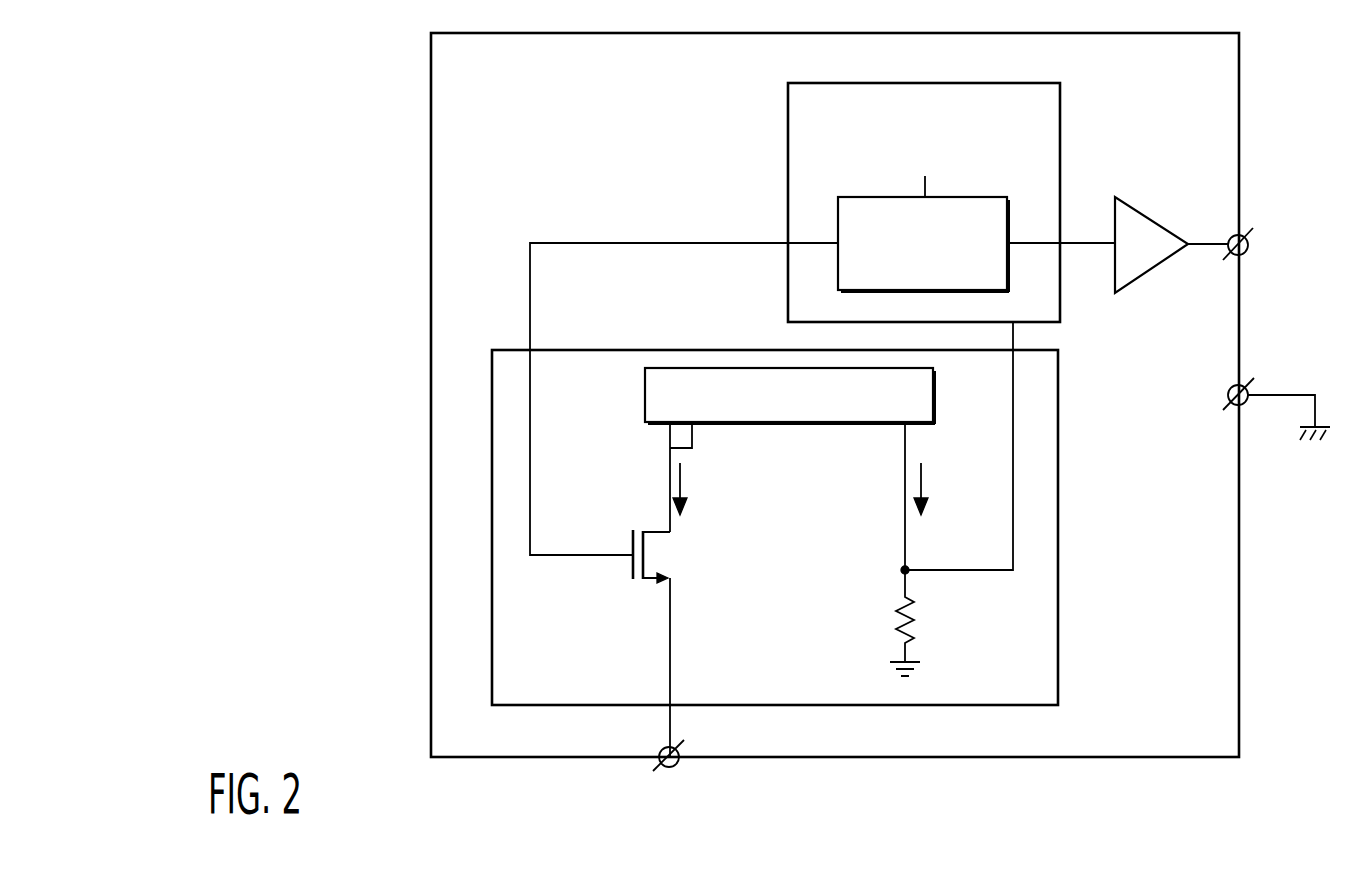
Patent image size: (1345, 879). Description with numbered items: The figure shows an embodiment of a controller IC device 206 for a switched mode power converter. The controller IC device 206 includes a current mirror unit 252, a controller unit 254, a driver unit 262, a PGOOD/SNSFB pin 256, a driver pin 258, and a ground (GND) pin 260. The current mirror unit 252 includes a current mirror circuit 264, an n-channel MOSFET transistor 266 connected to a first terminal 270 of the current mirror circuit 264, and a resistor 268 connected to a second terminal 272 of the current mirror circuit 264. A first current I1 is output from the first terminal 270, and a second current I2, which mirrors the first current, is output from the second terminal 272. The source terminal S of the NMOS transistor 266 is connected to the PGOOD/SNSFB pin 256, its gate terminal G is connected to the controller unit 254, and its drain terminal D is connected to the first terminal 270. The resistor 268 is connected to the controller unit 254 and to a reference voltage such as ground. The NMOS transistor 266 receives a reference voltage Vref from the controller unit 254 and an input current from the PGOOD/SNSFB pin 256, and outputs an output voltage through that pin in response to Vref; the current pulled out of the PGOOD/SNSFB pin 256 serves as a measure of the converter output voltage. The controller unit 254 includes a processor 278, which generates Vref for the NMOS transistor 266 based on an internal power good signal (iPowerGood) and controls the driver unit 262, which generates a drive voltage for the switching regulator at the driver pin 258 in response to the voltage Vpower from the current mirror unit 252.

The controller IC device 206 is at (431, 92).
The current mirror unit 252 is at (491, 501).
The controller unit 254 is at (788, 121).
The PGOOD/SNSFB pin 256 is at (678, 765).
The driver pin 258 is at (1243, 232).
The ground (GND) pin 260 is at (1246, 403).
The driver unit 262 is at (1152, 217).
The current mirror circuit 264 is at (783, 425).
The n-channel MOSFET (NMOS) transistor 266 is at (646, 556).
The resistor 268 is at (897, 622).
The first terminal of the current mirror circuit 270 is at (666, 425).
The second terminal of the current mirror circuit 272 is at (903, 428).
The processor 278 is at (838, 219).